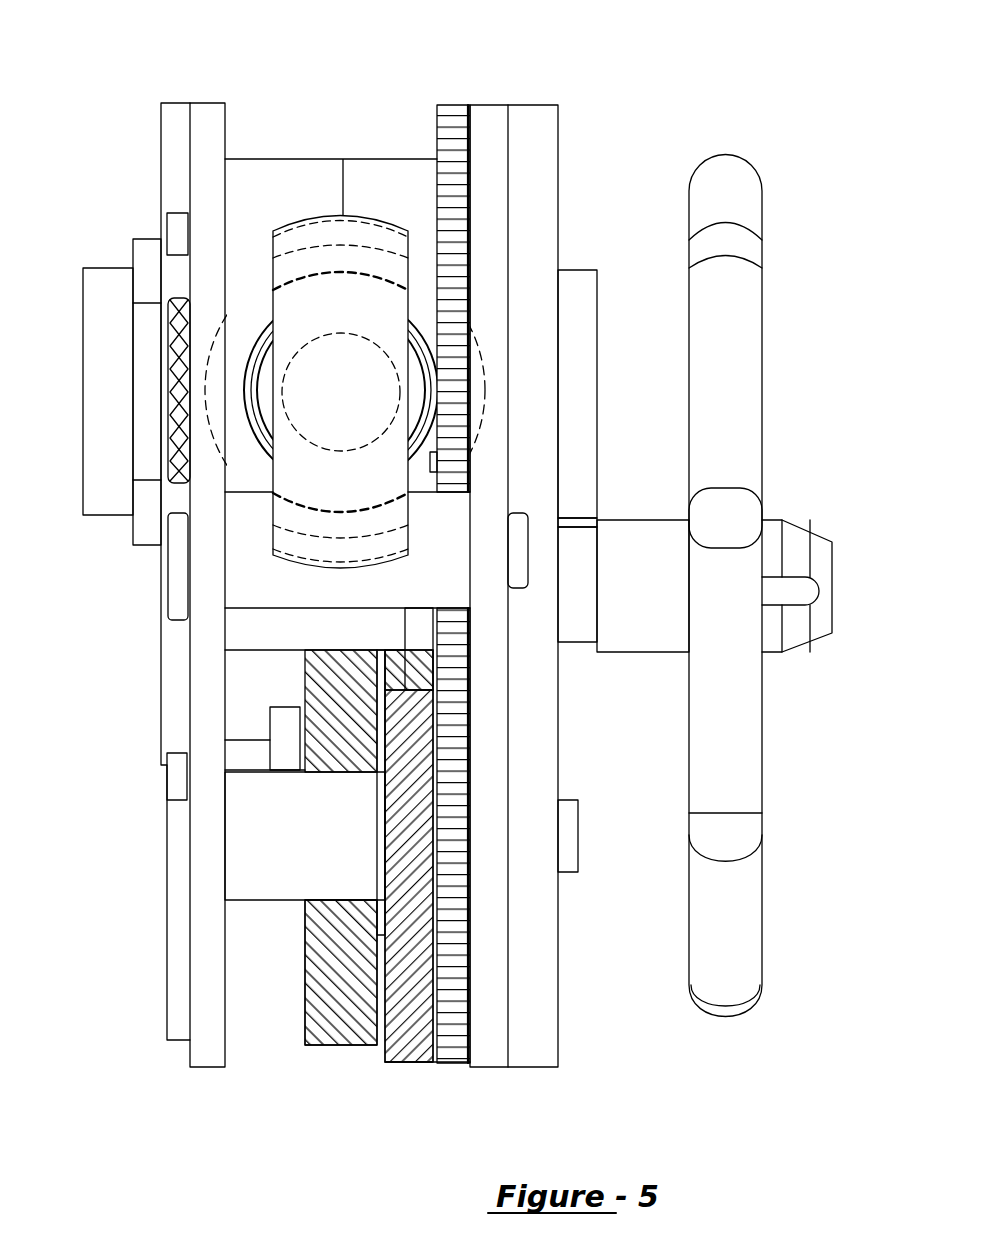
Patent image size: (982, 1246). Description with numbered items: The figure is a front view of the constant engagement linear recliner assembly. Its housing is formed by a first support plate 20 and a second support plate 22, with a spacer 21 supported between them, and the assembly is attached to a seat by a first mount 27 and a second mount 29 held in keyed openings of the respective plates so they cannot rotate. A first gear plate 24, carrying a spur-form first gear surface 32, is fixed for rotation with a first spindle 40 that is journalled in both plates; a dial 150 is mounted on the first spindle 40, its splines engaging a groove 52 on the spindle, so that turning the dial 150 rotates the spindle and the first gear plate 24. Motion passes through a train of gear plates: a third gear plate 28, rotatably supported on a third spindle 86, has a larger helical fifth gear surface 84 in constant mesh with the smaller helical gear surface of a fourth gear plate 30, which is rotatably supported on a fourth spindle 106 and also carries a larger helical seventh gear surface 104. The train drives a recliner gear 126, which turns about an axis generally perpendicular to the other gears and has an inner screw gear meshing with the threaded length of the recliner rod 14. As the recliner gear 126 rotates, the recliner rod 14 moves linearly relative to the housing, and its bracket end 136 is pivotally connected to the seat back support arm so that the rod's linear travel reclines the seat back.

The recliner rod 14 is at (300, 214).
The bracket end 136 is at (376, 257).
The first gear surface 32 is at (452, 156).
The first gear plate 24 is at (458, 102).
The first mount 27 is at (584, 278).
The second mount 29 is at (109, 282).
The dial 150 is at (737, 355).
The recliner gear 126 is at (180, 412).
The spacer 21 is at (258, 583).
The fourth spindle 106 is at (246, 734).
The third spindle 86 is at (265, 896).
The second support plate 22 is at (187, 1040).
The fourth gear plate 30 is at (300, 1012).
The seventh gear surface 104 is at (368, 1045).
The fifth gear surface 84 is at (405, 1042).
The third gear plate 28 is at (421, 1072).
The first support plate 20 is at (488, 1055).
The first spindle 40 is at (636, 658).
The groove 52 is at (804, 595).